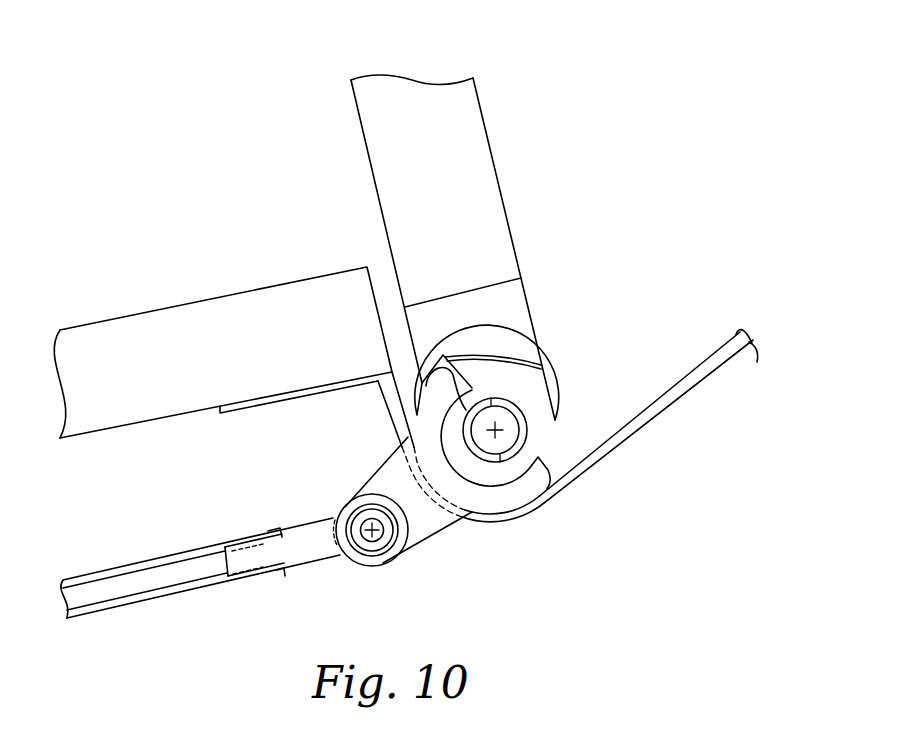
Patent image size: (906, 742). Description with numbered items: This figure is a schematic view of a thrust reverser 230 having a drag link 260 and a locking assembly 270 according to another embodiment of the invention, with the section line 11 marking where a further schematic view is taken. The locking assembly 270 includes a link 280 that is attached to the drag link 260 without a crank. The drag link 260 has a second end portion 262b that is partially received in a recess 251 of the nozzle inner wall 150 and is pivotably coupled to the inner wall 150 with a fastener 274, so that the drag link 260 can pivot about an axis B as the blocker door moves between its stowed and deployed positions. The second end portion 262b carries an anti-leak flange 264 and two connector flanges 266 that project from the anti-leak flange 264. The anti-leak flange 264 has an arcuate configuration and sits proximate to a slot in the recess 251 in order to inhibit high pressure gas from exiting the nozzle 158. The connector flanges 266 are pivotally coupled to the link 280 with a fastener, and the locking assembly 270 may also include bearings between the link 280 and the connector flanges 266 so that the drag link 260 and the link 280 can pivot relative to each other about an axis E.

The thrust reverser 230 is at (653, 91).
The drag link 260 is at (462, 143).
The second end portion 262b is at (497, 258).
The anti-leak flange 264 is at (507, 502).
The fastener 274 is at (527, 430).
The recess 251 is at (545, 507).
The connector flanges 266 is at (415, 523).
The link 280 is at (122, 590).
The nozzle inner wall 150 is at (173, 317).
The nozzle 158 is at (250, 222).
The locking assembly 270 is at (580, 582).
The axis B is at (495, 430).
The axis E is at (378, 538).
The line 11- 11 is at (327, 563).